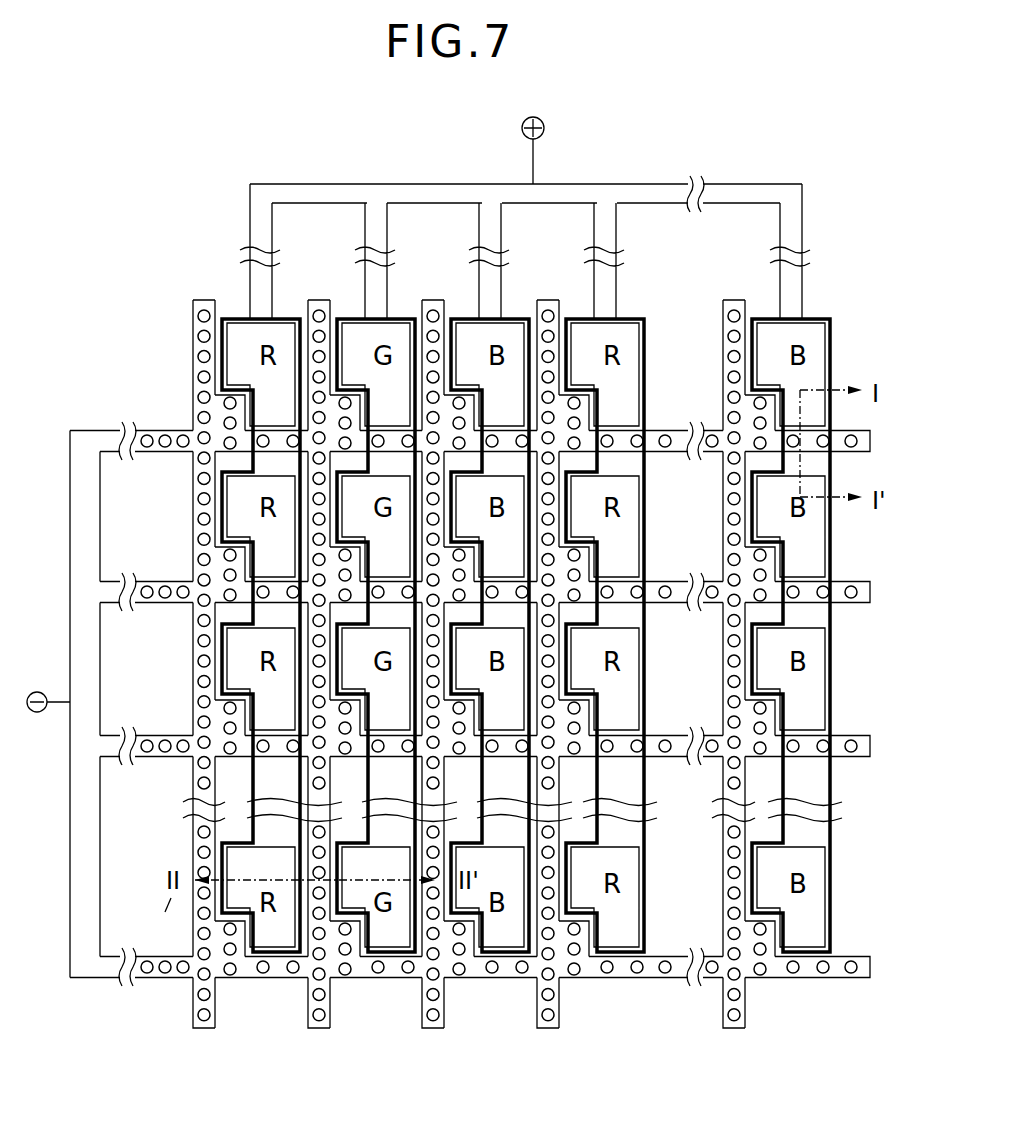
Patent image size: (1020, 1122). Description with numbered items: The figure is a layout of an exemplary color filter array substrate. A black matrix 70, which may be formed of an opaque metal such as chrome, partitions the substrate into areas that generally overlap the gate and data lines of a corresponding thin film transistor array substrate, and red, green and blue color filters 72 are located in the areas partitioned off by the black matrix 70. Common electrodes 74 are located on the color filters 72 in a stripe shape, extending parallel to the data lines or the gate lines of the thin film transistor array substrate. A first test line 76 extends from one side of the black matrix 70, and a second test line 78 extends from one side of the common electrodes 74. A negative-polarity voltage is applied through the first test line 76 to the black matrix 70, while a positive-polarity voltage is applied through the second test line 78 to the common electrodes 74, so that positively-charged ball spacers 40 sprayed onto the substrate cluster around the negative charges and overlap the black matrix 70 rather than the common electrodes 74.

The ball spacers 40 is at (637, 978).
The black matrix 70 is at (870, 443).
The color filters 72 is at (828, 869).
The common electrodes 74 is at (826, 731).
The first test line 76 is at (82, 430).
The second test line 78 is at (802, 198).